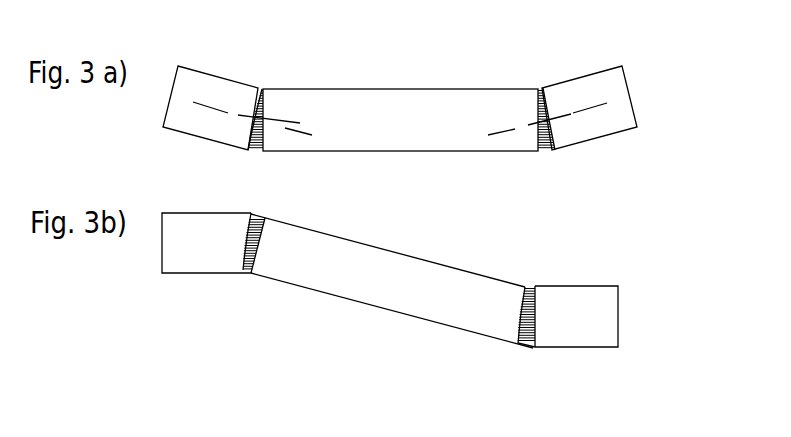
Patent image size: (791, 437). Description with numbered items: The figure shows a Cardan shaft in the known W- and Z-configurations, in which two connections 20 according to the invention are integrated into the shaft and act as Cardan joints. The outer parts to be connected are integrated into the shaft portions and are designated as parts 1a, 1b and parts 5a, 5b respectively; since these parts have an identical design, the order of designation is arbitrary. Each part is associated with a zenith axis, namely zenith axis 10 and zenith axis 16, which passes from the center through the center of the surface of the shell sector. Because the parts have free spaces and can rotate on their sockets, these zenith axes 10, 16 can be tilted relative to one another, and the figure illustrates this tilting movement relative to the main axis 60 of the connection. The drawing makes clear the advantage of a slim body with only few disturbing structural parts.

In FIG. 3A, the zenith axis 10 is at (540, 120).
In FIG. 3A, the integrated part 1 of first connection 1a is at (205, 117).
In FIG. 3A, the integrated part 1 of second connection 1b is at (508, 143).
In FIG. 3A, the integrated part 5 of first connection 5a is at (285, 143).
In FIG. 3A, the integrated part 5 of second connection 5b is at (593, 125).
In FIG. 3A, the zenith axis 16 is at (297, 122).
In FIG. 3A, the main axis 60 is at (224, 114).
In FIG. 3B, the connection 20 is at (250, 285).